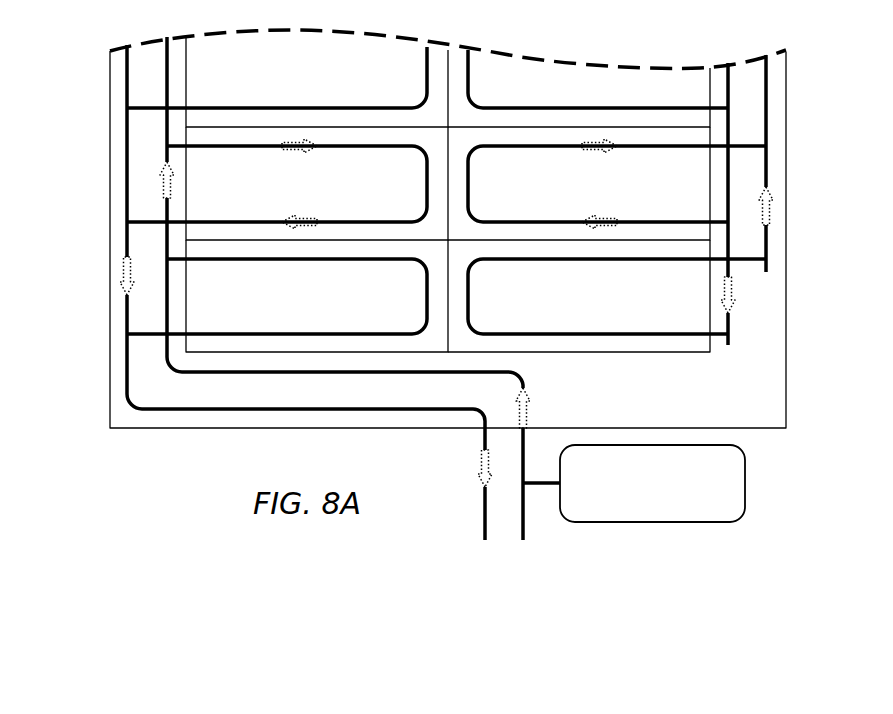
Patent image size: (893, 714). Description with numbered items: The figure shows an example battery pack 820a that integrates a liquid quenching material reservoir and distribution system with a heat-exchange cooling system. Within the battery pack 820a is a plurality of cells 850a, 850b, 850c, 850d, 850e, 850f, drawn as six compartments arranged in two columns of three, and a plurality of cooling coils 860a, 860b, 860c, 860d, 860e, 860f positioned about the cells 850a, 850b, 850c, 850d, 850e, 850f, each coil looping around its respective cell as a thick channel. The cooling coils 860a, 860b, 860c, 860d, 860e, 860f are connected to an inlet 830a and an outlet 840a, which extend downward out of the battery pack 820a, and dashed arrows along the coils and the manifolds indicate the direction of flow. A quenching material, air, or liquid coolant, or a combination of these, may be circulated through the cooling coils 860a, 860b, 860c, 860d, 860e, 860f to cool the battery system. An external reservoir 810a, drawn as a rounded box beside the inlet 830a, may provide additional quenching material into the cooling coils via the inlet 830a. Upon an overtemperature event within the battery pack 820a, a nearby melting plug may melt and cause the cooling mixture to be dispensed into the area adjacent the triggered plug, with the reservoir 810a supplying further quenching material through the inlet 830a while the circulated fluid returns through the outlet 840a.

The reservoir 810a is at (652, 483).
The battery pack 820a is at (173, 428).
The inlet 830a is at (523, 522).
The outlet 840a is at (485, 522).
The cell 850a is at (317, 81).
The cell 850b is at (579, 97).
The cell 850c is at (317, 183).
The cell 850d is at (579, 183).
The cell 850e is at (317, 296).
The cell 850f is at (579, 296).
The cooling coil 860a is at (427, 74).
The cooling coil 860b is at (468, 82).
The cooling coil 860c is at (427, 194).
The cooling coil 860d is at (468, 196).
The cooling coil 860e is at (427, 306).
The cooling coil 860f is at (468, 318).